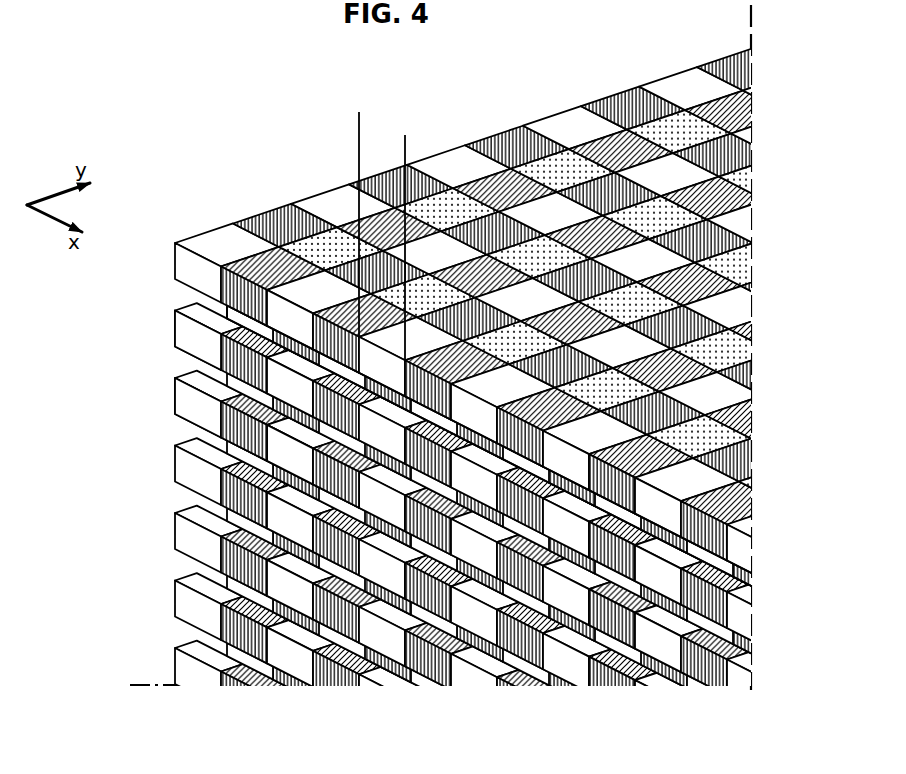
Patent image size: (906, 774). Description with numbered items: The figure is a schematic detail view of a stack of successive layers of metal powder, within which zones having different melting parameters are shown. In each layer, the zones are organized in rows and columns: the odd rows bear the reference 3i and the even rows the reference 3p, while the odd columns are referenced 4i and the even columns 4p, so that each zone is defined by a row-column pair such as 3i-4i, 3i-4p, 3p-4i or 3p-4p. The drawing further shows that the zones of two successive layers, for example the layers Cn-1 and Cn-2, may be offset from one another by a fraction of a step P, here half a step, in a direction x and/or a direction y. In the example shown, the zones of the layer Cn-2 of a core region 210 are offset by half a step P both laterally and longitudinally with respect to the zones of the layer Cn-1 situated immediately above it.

The core region 210 is at (456, 108).
The odd rows 3i is at (200, 221).
The even rows 3p is at (258, 204).
The layer Cn-1 is at (217, 302).
The layer Cn-2 is at (168, 326).
The odd columns 4i is at (193, 413).
The even columns 4p is at (242, 438).
The step P is at (403, 146).